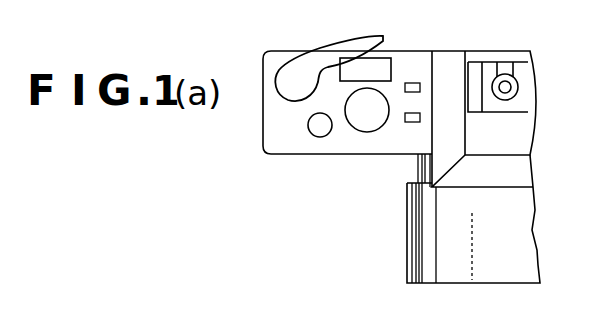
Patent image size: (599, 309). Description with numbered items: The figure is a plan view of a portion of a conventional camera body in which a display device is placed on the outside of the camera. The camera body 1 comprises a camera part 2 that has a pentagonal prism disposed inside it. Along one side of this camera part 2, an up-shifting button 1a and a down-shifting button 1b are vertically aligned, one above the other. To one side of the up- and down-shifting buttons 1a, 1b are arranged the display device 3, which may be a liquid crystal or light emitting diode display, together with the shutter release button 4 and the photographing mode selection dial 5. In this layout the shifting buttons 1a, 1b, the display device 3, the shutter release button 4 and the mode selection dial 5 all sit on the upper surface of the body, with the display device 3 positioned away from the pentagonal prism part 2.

The handle body 1 is at (399, 119).
The up-shifting button 1a is at (410, 124).
The down-shifting button 1b is at (415, 82).
The camera part 2 is at (520, 136).
The display device 3 is at (381, 63).
The shutter release button 4 is at (318, 138).
The photographing mode selection dial 5 is at (363, 128).